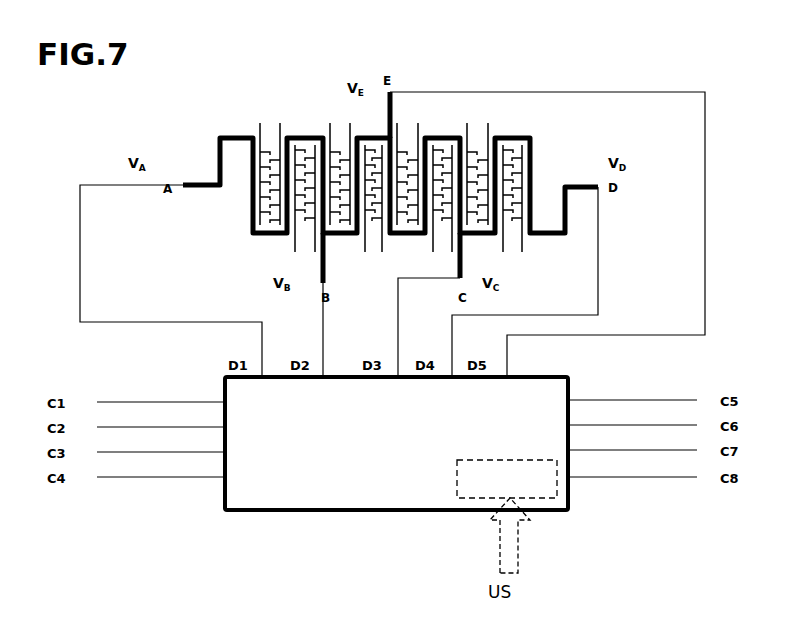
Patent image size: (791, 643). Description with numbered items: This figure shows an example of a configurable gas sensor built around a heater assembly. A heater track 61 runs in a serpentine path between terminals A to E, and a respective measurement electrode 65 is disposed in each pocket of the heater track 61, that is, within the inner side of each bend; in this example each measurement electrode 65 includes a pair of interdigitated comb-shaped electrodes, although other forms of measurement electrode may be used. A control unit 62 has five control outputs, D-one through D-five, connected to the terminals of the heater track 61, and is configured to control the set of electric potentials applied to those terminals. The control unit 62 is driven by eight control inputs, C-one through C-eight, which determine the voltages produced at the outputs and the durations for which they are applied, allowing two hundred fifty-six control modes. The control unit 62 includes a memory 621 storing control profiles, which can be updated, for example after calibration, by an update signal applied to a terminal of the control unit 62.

The heater track 61 is at (225, 137).
The measurement electrode 65 is at (280, 130).
The control unit 62 is at (405, 483).
The memory 621 is at (557, 487).